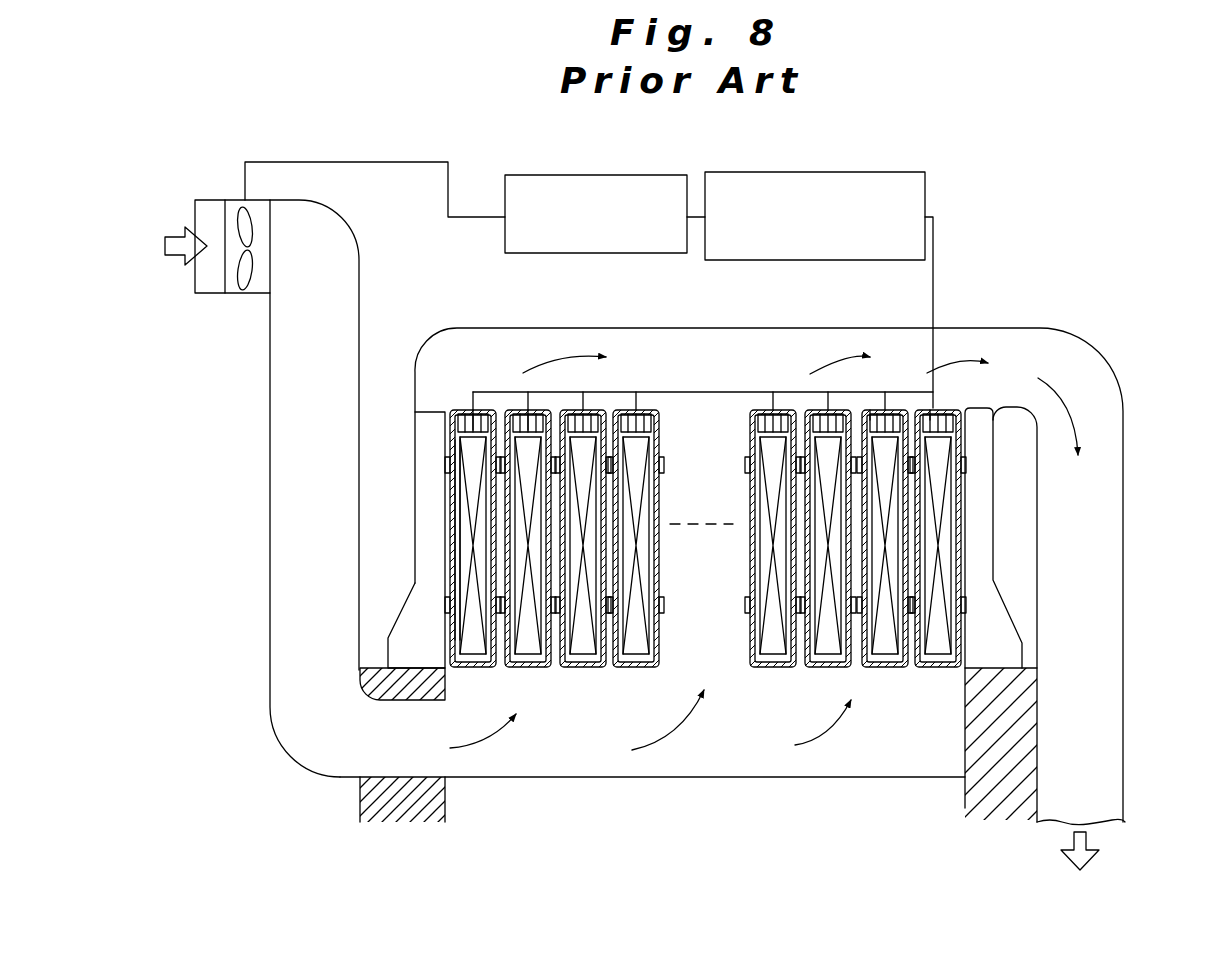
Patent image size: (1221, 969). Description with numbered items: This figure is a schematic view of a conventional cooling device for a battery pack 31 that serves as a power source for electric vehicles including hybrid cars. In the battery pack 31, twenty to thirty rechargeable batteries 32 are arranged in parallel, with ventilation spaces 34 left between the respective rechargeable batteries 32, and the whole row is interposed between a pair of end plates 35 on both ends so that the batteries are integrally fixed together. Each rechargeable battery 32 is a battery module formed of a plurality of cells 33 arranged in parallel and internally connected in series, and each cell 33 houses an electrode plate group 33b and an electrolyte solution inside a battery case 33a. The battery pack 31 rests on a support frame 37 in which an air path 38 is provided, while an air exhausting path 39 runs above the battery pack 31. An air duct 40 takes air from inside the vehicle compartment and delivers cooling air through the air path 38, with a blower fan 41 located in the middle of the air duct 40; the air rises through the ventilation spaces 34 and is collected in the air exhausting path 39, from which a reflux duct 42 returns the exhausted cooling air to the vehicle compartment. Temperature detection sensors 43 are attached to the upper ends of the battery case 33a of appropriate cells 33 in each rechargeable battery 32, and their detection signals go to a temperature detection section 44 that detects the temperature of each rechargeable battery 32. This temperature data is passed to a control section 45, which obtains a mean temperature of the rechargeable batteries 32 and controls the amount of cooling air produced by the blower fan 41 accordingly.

The battery pack 31 is at (664, 628).
The rechargeable battery 32 is at (480, 672).
The cell 33 is at (705, 545).
The battery case 33a is at (456, 528).
The electrode plate group 33b is at (465, 565).
The ventilation space 34 is at (500, 672).
The end plate 35 is at (432, 440).
The support frame 37 is at (410, 805).
The air path 38 is at (722, 766).
The air exhausting path 39 is at (722, 376).
The air duct 40 is at (285, 528).
The blower fan 41 is at (250, 293).
The reflux duct 42 is at (1103, 655).
The temperature detection sensor 43 is at (473, 430).
The temperature detection section 44 is at (878, 172).
The control section 45 is at (665, 180).